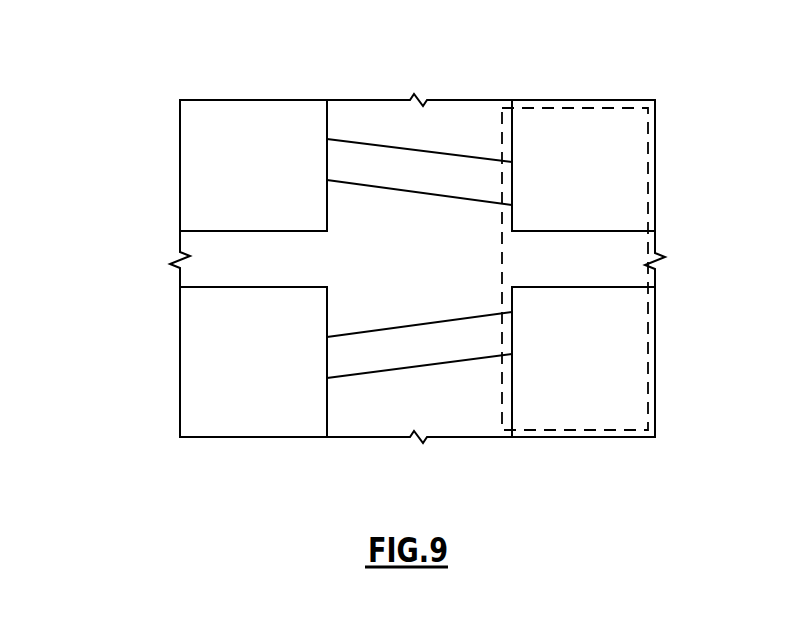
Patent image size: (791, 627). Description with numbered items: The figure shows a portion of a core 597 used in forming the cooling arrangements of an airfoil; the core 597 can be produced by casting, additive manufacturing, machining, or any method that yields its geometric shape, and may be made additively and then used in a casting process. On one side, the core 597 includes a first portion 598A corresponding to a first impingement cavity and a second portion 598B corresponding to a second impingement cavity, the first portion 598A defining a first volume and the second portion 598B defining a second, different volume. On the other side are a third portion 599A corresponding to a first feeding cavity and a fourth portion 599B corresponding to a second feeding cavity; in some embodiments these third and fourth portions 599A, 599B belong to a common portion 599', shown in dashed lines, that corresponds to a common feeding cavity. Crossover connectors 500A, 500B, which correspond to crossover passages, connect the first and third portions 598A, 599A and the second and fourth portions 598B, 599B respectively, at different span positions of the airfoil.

The core 597 is at (148, 63).
The first portion 598A is at (275, 118).
The second portion 598B is at (275, 428).
The third portion 599A is at (558, 135).
The fourth portion 599B is at (558, 413).
The common portion 599' is at (533, 269).
The crossover connector 500A is at (435, 152).
The crossover connector 500B is at (365, 375).